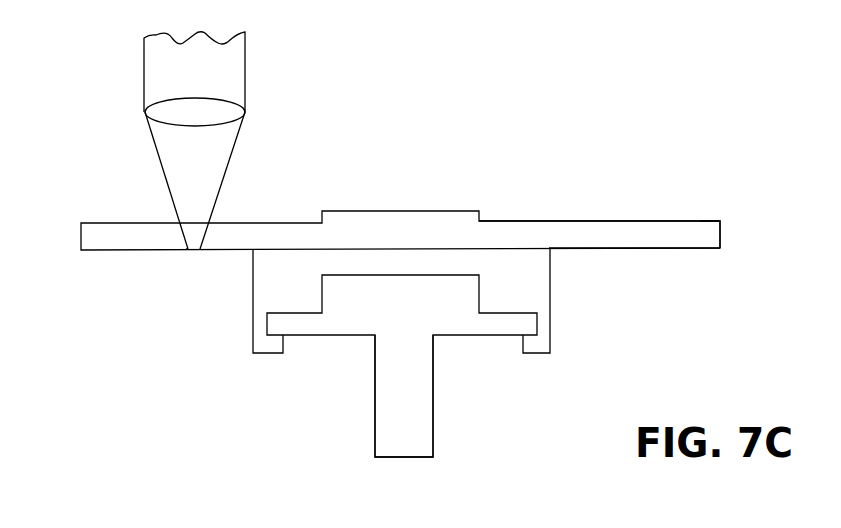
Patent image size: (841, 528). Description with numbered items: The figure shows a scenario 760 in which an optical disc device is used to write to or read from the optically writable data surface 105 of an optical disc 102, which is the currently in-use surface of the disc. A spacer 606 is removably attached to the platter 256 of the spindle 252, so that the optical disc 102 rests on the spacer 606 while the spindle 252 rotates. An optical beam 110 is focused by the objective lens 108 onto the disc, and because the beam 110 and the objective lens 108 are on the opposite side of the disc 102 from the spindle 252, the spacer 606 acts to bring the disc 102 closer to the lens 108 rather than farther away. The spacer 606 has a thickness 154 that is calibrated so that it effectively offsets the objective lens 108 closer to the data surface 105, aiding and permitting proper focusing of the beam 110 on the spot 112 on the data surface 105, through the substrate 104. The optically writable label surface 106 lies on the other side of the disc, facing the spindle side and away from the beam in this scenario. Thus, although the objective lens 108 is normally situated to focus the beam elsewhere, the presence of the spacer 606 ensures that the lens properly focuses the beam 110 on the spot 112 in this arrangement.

The scenario 760 is at (62, 336).
The optical beam 110 is at (217, 81).
The objective lens 108 is at (167, 108).
The optical disc 102 is at (720, 227).
The substrate 104 is at (622, 225).
The optically writable data surface 105 is at (690, 247).
The optically writable label surface 106 is at (645, 247).
The spot 112 is at (193, 246).
The spacer 606 is at (265, 347).
The platter 256 is at (463, 328).
The spindle 252 is at (375, 430).
The thickness 154 is at (513, 255).